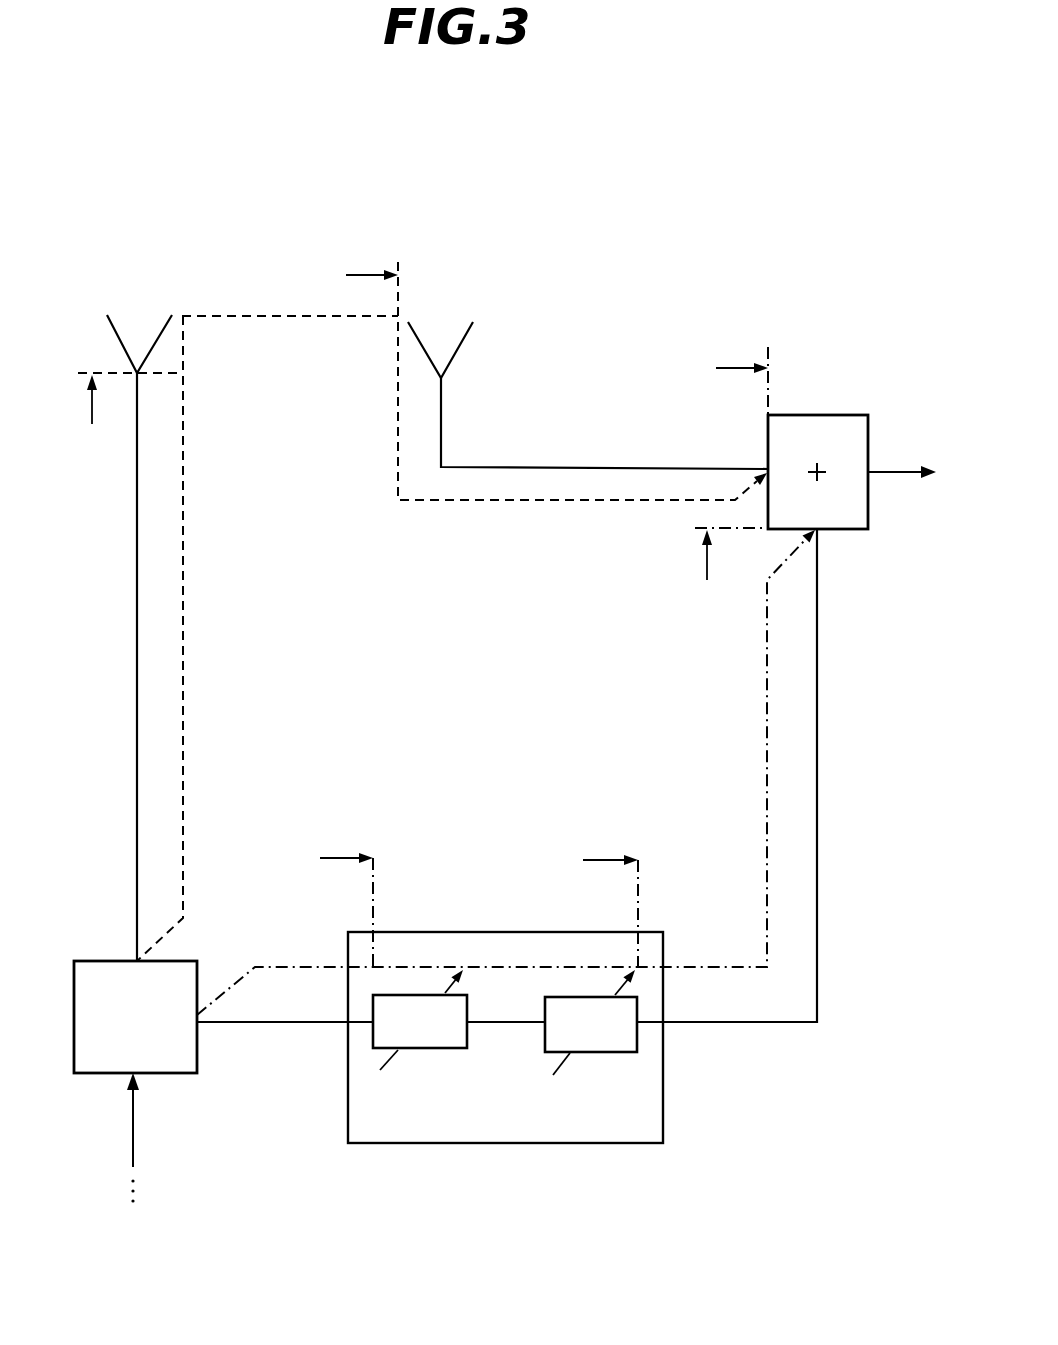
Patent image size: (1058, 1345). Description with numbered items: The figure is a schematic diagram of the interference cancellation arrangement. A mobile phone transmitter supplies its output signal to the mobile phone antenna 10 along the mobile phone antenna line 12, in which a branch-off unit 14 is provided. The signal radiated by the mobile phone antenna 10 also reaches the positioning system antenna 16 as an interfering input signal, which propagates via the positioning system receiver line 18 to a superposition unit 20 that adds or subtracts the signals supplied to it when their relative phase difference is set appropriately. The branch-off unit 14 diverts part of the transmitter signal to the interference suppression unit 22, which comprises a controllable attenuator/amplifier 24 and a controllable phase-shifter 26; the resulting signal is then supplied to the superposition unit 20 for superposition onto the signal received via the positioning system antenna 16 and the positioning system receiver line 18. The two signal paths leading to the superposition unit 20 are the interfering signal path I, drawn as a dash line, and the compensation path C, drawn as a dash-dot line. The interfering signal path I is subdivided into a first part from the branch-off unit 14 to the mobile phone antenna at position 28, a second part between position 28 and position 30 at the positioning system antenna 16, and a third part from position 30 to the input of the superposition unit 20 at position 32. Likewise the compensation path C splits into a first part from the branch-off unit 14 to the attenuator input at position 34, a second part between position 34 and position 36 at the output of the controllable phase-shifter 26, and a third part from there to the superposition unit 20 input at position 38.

The mobile phone antenna 10 is at (150, 292).
The mobile phone antenna line 12 is at (136, 728).
The branch-off unit 14 is at (99, 960).
The positioning system antenna 16 is at (478, 294).
The positioning system receiver line 18 is at (585, 468).
The superposition unit 20 is at (840, 391).
The interference suppression unit 22 is at (663, 1133).
The controllable attenuator/amplifier 24 is at (391, 995).
The controllable phase-shifter 26 is at (557, 997).
The position at the mobile phone antenna 28 is at (89, 418).
The position at the positioning system antenna 30 is at (355, 280).
The position at the input to the superposition unit 32 is at (725, 372).
The position at the input of the controllable attenuator 34 is at (331, 862).
The position at the output of the controllable phase-shifter 36 is at (595, 864).
The position at the input to the superposition unit 38 is at (707, 575).
The interfering signal path I is at (184, 720).
The compensation path C is at (767, 736).